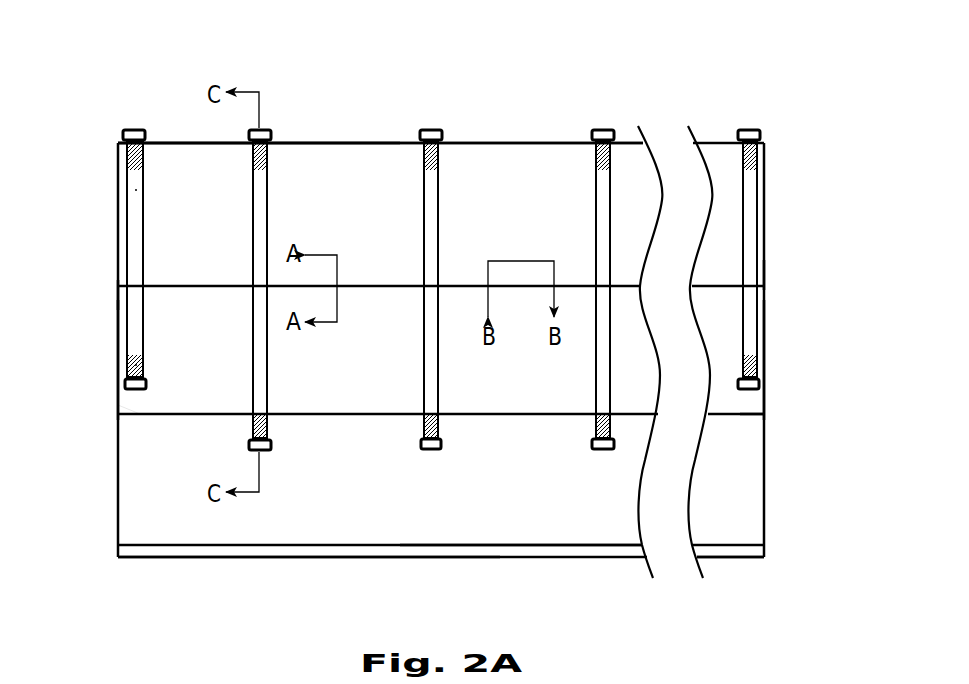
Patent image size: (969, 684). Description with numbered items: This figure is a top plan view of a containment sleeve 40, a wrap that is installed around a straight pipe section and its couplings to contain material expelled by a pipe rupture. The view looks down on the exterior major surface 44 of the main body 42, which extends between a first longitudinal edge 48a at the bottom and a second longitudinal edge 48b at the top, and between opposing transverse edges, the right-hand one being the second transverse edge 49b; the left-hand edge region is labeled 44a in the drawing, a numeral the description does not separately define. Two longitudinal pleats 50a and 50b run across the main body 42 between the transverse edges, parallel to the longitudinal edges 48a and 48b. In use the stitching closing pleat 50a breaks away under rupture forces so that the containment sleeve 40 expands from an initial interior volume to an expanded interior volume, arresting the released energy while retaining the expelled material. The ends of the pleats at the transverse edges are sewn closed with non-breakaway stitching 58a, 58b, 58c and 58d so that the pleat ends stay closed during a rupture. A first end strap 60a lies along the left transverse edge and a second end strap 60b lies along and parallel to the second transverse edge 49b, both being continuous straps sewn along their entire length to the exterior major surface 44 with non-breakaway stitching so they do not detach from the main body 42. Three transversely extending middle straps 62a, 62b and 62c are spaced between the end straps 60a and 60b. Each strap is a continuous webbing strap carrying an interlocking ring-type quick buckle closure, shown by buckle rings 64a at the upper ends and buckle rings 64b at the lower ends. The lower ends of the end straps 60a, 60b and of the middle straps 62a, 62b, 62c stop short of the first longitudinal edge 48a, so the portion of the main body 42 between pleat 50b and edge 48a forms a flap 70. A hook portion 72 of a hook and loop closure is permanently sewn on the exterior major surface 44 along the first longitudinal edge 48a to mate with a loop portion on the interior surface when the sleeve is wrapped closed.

The containment sleeve 40 is at (802, 61).
The main body 42 is at (767, 482).
The exterior major surface 44 is at (505, 167).
The housing side wall 44a is at (117, 362).
The first longitudinal edge 48a is at (571, 561).
The second longitudinal edge 48b is at (345, 140).
The second transverse edge 49b is at (767, 318).
The pleat 50a is at (158, 280).
The pleat 50b is at (158, 418).
The non-breakaway stitching 58a is at (119, 296).
The non-breakaway stitching 58b is at (764, 275).
The non-breakaway stitching 58c is at (131, 416).
The non-breakaway stitching 58d is at (764, 417).
The first end strap 60a is at (128, 202).
The second end strap 60b is at (758, 202).
The middle strap 62a is at (267, 203).
The middle strap 62b is at (438, 205).
The middle strap 62c is at (610, 203).
The buckle ring 64a is at (138, 128).
The buckle ring 64b is at (272, 440).
The flap 70 is at (737, 518).
The hook portion 72 is at (292, 560).